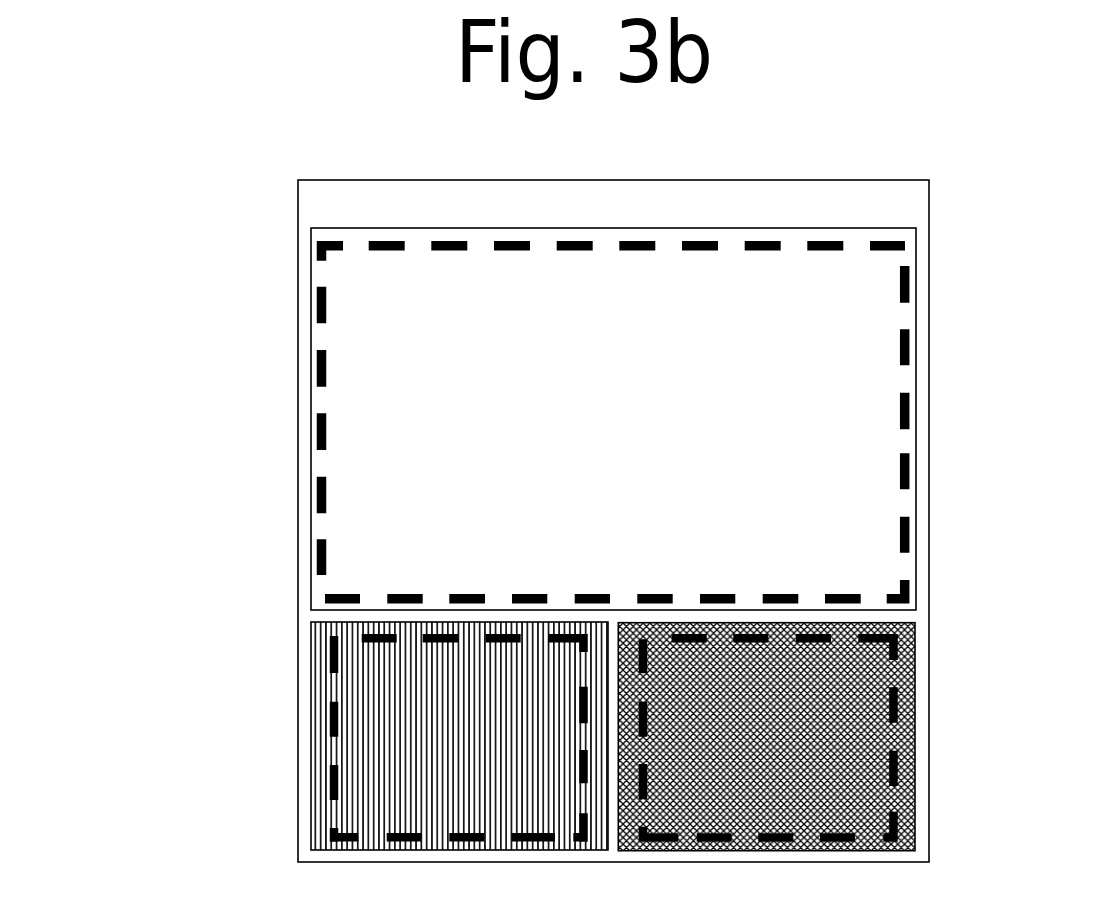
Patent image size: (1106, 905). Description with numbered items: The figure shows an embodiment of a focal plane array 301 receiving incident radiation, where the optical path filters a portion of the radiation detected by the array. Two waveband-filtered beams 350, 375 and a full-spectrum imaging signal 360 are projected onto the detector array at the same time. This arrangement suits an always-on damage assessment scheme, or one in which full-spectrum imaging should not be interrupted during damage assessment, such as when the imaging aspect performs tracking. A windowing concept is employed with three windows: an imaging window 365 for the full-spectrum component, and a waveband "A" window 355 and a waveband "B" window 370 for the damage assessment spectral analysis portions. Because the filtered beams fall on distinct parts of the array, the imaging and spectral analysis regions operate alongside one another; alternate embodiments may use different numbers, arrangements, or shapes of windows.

The focal plane array 301 is at (298, 318).
The full-spectrum imaging signal 360 is at (310, 460).
The imaging window 365 is at (320, 545).
The waveband-filtered beam 350 is at (323, 749).
The waveband "A" window 355 is at (331, 833).
The waveband "B" window 370 is at (898, 708).
The waveband-filtered beam 375 is at (903, 795).